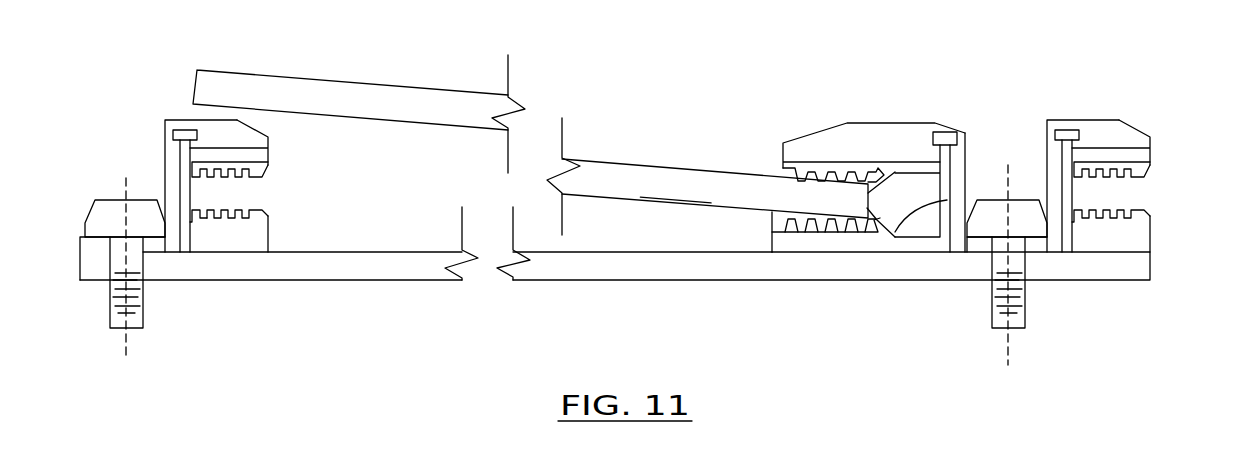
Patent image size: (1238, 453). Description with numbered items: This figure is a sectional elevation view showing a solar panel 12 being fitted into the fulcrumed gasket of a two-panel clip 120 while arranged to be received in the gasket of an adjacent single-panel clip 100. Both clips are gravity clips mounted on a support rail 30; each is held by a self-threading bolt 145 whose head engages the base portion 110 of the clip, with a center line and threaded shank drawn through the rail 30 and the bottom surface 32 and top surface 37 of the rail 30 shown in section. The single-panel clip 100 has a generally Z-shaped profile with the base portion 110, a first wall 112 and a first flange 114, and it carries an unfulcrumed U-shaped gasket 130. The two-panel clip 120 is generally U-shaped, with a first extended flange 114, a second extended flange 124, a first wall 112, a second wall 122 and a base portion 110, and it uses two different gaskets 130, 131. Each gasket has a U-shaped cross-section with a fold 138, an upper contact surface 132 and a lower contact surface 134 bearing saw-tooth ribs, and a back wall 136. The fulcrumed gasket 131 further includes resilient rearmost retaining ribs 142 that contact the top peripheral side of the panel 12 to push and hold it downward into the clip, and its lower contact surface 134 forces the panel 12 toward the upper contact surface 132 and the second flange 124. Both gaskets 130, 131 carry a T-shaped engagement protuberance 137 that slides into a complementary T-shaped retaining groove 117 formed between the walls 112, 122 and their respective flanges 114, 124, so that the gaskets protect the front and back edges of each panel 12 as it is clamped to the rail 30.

The single-panel clip 100 is at (107, 97).
The base portion 110 is at (92, 246).
The first wall 112 is at (172, 152).
The first flange 114 is at (227, 140).
The T-shaped retaining groove 117 is at (1069, 132).
The two-panel clip 120 is at (1110, 105).
The second wall 122 is at (958, 232).
The second extended flange 124 is at (862, 140).
The unfulcrumed U-shaped gasket 130 is at (275, 243).
The fulcrumed U-shaped gasket 131 is at (764, 233).
The upper contact surface 132 is at (264, 166).
The lower contact surface 134 is at (262, 203).
The back wall 136 is at (909, 101).
The T-shaped engagement protuberance 137 is at (948, 140).
The fold 138 is at (203, 218).
The retaining rib 142 is at (880, 180).
The self-threading bolt 145 is at (118, 318).
The solar panel 12 is at (632, 162).
The support rail 30 is at (677, 270).
The bottom surface of base plate 32 is at (610, 280).
The top surface of base plate 37 is at (713, 252).